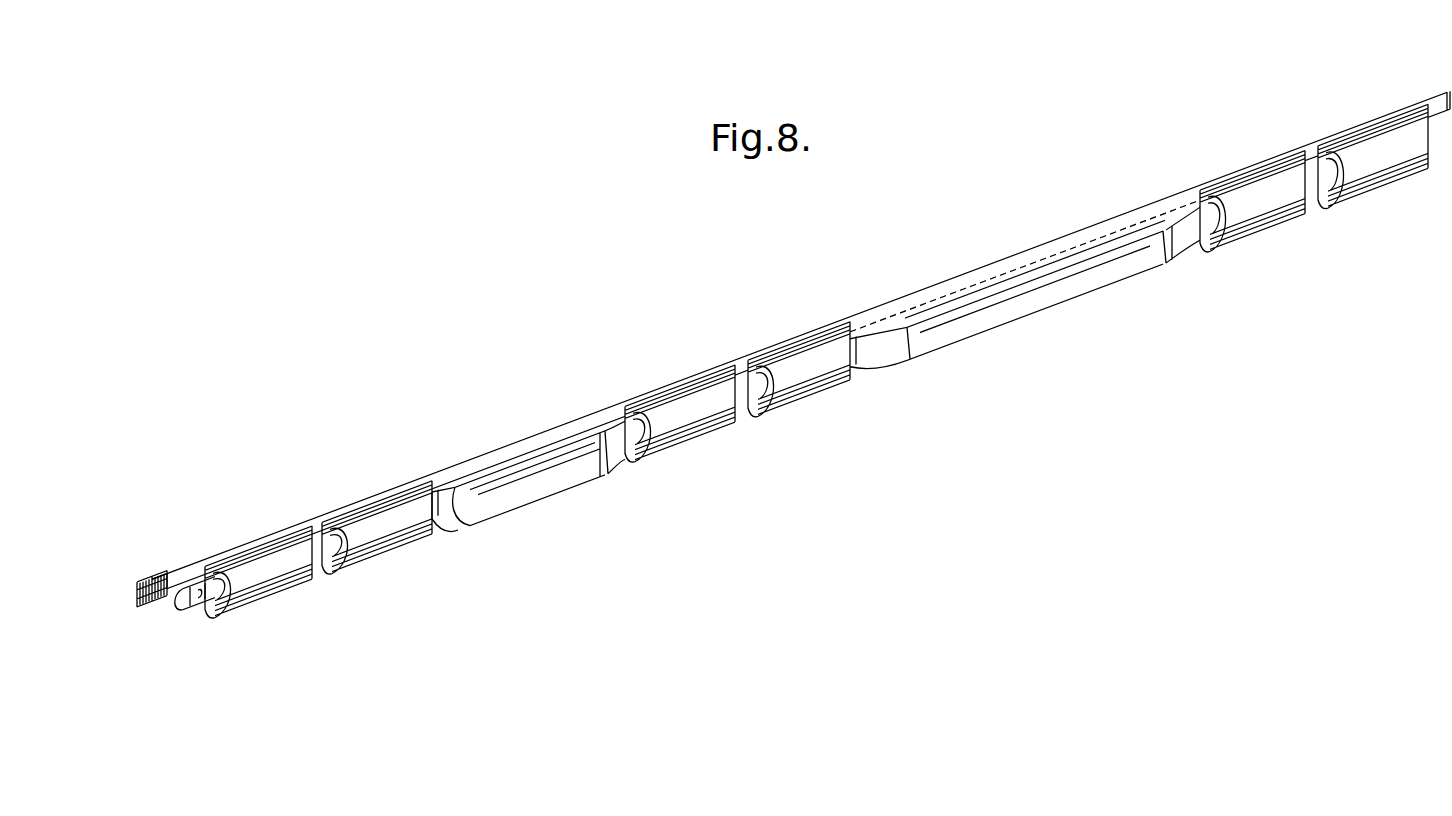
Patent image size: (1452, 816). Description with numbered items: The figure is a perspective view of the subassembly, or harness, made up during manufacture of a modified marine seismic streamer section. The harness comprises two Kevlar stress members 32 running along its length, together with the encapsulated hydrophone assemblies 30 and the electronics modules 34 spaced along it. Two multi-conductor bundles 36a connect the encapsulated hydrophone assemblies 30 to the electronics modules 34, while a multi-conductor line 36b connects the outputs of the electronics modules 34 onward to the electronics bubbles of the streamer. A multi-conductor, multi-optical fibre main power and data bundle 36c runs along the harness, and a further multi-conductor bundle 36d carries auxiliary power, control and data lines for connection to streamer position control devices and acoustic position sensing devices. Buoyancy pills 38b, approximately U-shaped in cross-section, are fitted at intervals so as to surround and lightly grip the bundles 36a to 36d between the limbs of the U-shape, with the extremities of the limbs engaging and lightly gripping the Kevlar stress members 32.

The encapsulated hydrophone assembly 30 is at (548, 488).
The Kevlar stress member 32 is at (162, 582).
The electronics module 34 is at (1093, 283).
The multi-conductor bundle 36a is at (445, 518).
The multi-conductor line 36b is at (1183, 238).
The main power and data bundle 36c is at (990, 290).
The multi-conductor bundle 36d is at (176, 608).
The buoyancy pill 38b is at (372, 540).